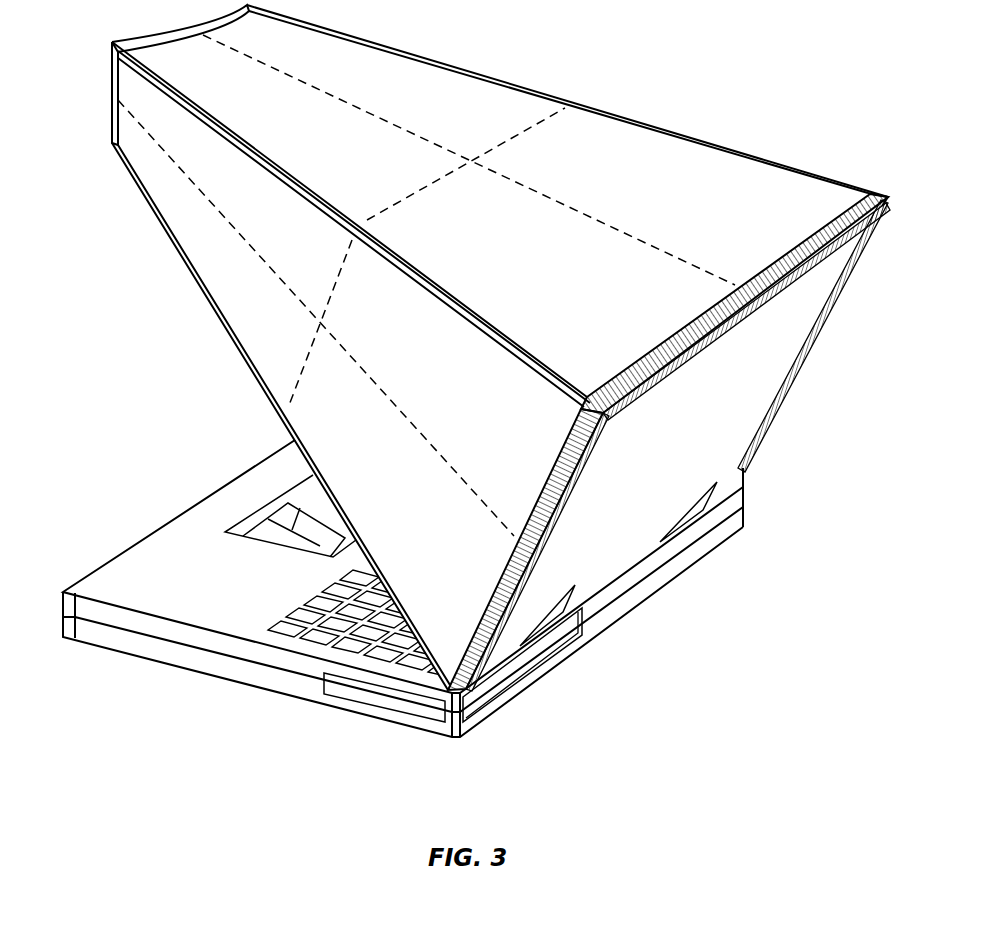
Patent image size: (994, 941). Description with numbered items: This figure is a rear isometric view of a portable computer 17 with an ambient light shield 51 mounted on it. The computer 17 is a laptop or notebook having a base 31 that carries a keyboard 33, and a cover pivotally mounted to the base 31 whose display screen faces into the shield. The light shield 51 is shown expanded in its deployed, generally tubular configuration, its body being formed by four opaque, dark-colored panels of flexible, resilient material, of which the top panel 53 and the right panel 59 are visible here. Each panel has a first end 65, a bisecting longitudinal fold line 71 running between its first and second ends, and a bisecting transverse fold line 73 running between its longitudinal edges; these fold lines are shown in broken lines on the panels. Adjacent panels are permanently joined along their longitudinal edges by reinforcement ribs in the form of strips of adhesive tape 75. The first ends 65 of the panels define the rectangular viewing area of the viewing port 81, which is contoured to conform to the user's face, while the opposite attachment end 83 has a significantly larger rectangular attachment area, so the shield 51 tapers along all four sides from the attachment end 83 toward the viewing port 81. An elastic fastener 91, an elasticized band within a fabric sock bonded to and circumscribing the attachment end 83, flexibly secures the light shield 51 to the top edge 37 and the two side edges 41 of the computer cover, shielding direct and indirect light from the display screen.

The portable computer 17 is at (203, 457).
The base 31 is at (102, 567).
The keyboard 33 is at (315, 597).
The top edge 37 is at (727, 332).
The side edges 41 is at (568, 492).
The light shield 51 is at (547, 60).
The top panel 53 is at (435, 85).
The right panel 59 is at (322, 415).
The first end 65 is at (205, 31).
The longitudinal fold line 71 is at (513, 180).
The transverse fold line 73 is at (422, 188).
The strips of adhesive tape 75 is at (283, 168).
The viewing port 81 is at (100, 86).
The attachment end 83 is at (867, 184).
The elastic fastener 91 is at (865, 192).